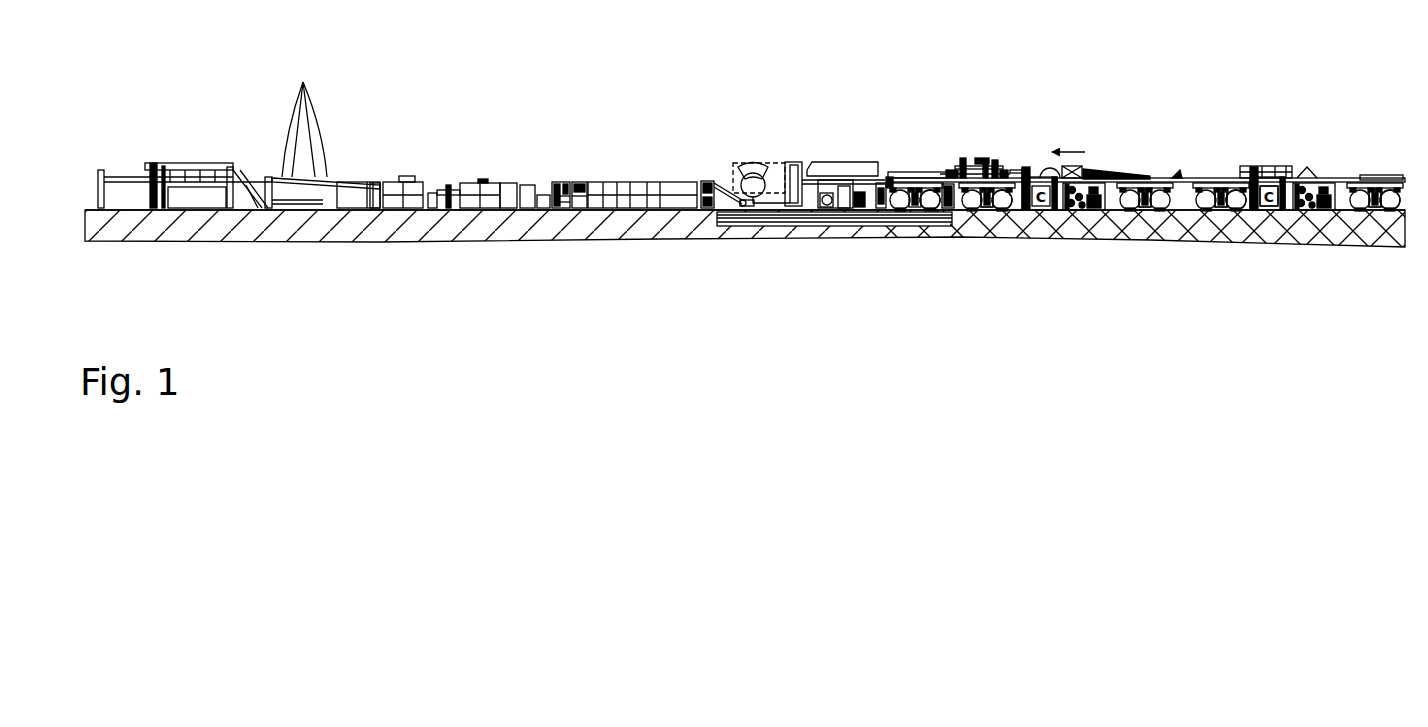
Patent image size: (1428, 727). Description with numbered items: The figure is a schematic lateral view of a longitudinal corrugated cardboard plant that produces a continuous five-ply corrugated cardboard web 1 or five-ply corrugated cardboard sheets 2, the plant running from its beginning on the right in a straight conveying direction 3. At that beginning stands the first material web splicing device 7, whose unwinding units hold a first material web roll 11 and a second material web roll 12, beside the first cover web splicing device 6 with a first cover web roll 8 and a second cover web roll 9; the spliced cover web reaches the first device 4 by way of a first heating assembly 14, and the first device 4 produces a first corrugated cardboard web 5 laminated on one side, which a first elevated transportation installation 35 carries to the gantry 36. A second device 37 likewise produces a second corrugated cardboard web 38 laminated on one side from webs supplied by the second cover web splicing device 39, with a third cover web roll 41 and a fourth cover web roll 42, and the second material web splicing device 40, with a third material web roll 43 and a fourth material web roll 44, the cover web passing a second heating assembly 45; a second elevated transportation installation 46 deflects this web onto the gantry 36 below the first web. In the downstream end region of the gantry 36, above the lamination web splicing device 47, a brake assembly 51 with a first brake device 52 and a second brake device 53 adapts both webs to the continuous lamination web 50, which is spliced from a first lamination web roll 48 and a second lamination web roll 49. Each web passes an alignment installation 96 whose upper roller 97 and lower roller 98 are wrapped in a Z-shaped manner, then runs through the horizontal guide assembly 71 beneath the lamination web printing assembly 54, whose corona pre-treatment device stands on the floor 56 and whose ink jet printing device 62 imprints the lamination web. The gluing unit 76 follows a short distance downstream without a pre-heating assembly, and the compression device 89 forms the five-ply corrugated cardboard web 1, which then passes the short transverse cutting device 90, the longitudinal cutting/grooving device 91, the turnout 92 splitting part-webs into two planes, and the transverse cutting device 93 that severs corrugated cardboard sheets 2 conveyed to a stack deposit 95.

The continuous five-ply corrugated cardboard web 1 is at (585, 183).
The corrugated cardboard sheets 2 is at (303, 82).
The conveying direction 3 is at (1068, 152).
The first device for producing a first corrugated cardboard web laminated on one sid 4 is at (1332, 215).
The first corrugated cardboard web laminated on one side 5 is at (1314, 168).
The first cover web splicing device 6 is at (1236, 212).
The first material web splicing device 7 is at (1382, 215).
The first cover web roll 8 is at (1223, 215).
The second cover web roll 9 is at (1260, 212).
The first material web roll 11 is at (1362, 212).
The second material web roll 12 is at (1392, 212).
The first heating assembly 14 is at (1274, 211).
The first elevated transportation installation 35 is at (1310, 167).
The gantry 36 is at (1113, 170).
The second device for producing a second corrugated cardboard web laminated on one s 37 is at (1085, 215).
The second corrugated cardboard web laminated on one side 38 is at (1083, 167).
The second cover web splicing device 39 is at (987, 216).
The second material web splicing device 40 is at (1152, 215).
The third cover web roll 41 is at (972, 212).
The fourth cover web roll 42 is at (999, 212).
The third material web roll 43 is at (1132, 212).
The fourth material web roll 44 is at (1203, 212).
The second heating assembly 45 is at (1043, 212).
The second elevated transportation installation 46 is at (1107, 167).
The lamination web splicing device 47 is at (908, 172).
The first lamination web roll 48 is at (898, 211).
The second lamination web roll 49 is at (930, 210).
The continuous lamination web 50 is at (878, 177).
The brake assembly 51 is at (982, 154).
The first brake device 52 is at (998, 160).
The second brake device 53 is at (1003, 167).
The lamination web printing assembly 54 is at (833, 153).
The floor or hard surface 56 is at (774, 234).
The ink jet printing device 62 is at (750, 163).
The guide assembly 71 is at (823, 232).
The gluing unit 76 is at (708, 180).
The compression device 89 is at (662, 173).
The short transverse cutting device 90 is at (578, 183).
The longitudinal cutting/grooving device 91 is at (482, 177).
The turnout 92 is at (447, 183).
The transverse cutting device 93 is at (403, 170).
The stack deposit 95 is at (192, 157).
The alignment installation 96 is at (957, 176).
The upper roller 97 is at (957, 182).
The lower roller 98 is at (950, 212).